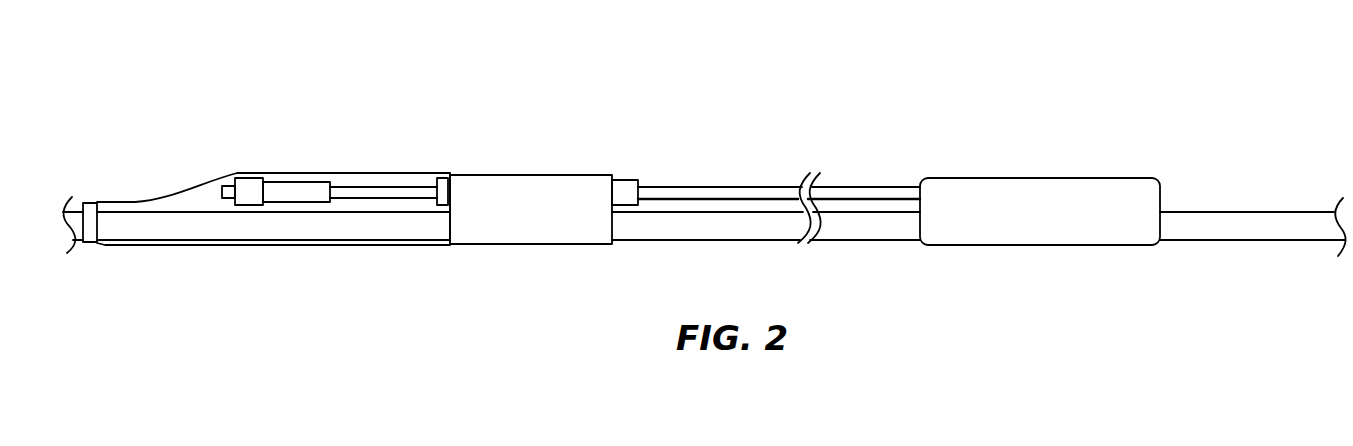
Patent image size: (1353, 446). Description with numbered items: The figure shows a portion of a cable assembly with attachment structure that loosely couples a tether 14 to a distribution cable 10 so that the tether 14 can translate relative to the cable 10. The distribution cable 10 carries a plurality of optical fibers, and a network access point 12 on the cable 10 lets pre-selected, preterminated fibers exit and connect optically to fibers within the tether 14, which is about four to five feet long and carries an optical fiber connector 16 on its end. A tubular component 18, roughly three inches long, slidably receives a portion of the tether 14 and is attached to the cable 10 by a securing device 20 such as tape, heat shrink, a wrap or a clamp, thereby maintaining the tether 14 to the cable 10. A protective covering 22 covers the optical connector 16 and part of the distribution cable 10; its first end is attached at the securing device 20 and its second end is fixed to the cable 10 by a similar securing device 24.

The distribution cable 10 is at (118, 212).
The network access point 12 is at (1038, 178).
The tether 14 is at (713, 186).
The optical fiber connector 16 is at (250, 179).
The tubular component 18 is at (622, 180).
The securing device 20 is at (520, 175).
The protective covering 22 is at (373, 173).
The securing device 24 is at (88, 203).